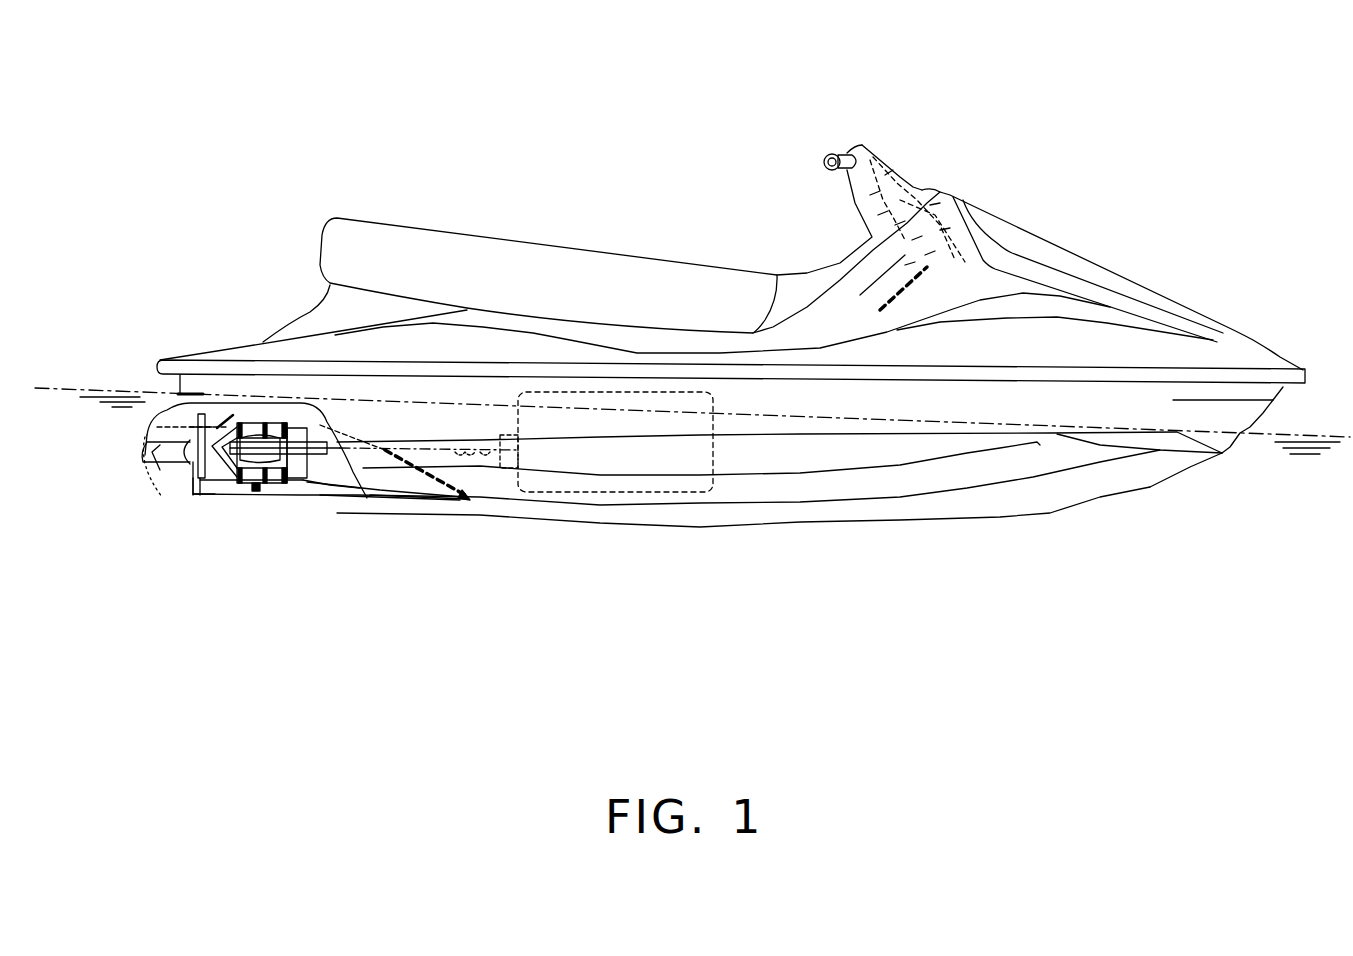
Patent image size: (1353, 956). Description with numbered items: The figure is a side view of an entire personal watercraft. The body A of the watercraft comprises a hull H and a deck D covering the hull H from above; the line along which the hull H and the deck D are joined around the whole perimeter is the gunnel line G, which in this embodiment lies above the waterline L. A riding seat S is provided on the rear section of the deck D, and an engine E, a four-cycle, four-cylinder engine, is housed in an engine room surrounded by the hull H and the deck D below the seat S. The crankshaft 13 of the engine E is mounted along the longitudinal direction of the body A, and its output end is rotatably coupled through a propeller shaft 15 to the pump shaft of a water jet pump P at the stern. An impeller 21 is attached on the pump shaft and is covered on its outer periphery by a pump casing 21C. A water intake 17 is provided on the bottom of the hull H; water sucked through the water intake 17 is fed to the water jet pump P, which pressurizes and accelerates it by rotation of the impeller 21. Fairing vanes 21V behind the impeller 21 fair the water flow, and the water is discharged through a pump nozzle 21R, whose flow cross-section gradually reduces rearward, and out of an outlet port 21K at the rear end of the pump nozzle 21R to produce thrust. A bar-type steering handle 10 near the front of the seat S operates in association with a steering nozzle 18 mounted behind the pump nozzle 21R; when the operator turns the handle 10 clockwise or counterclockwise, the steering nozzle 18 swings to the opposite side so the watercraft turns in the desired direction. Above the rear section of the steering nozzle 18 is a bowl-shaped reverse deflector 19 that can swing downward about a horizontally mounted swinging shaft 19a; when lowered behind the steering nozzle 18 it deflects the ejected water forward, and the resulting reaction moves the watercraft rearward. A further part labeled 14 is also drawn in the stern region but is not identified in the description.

The steering handle 10 is at (828, 154).
The riding seat S is at (330, 233).
The water jet pump P is at (252, 412).
The fairing vanes 21V is at (265, 422).
The gunnel line G is at (155, 364).
The waterline L is at (83, 388).
The reverse deflector 19 is at (160, 427).
The swinging shaft 19a is at (197, 450).
The outlet port 21K is at (187, 470).
The steering nozzle 18 is at (187, 490).
The pump nozzle 21R is at (212, 493).
The pump casing 21C is at (263, 488).
The impeller 21 is at (300, 482).
The impeller shaft 14 is at (300, 490).
The propeller shaft 15 is at (350, 478).
The water intake 17 is at (413, 488).
The crankshaft 13 is at (520, 462).
The engine E is at (713, 455).
The body A is at (1342, 265).
The deck D is at (1253, 343).
The hull H is at (1287, 399).